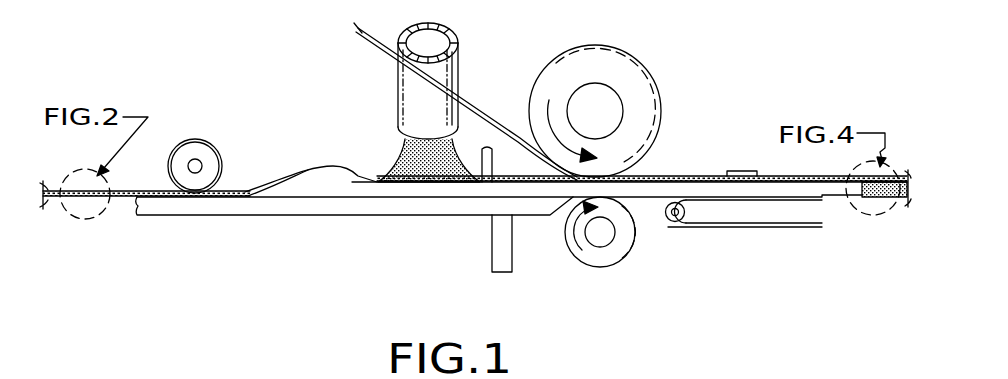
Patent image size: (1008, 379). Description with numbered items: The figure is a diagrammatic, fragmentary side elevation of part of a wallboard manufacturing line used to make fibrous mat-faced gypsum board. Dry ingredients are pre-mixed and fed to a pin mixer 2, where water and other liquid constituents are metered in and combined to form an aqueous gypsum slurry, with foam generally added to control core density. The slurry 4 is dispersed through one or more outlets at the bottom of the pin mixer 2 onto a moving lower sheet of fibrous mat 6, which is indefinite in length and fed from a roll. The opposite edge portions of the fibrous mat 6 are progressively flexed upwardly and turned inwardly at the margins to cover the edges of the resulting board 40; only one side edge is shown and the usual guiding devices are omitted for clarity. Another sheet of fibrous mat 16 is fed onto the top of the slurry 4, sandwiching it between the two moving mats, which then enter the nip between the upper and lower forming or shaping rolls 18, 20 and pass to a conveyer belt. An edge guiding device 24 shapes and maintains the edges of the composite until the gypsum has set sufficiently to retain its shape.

The pin mixer 2 is at (460, 52).
The slurry 4 is at (398, 152).
The fibrous mat 6 is at (122, 200).
The fibrous mat 16 is at (399, 48).
The upper forming roll 18 is at (655, 93).
The lower forming roll 20 is at (607, 257).
The edge guiding device 24 is at (727, 172).
The board 40 is at (893, 198).